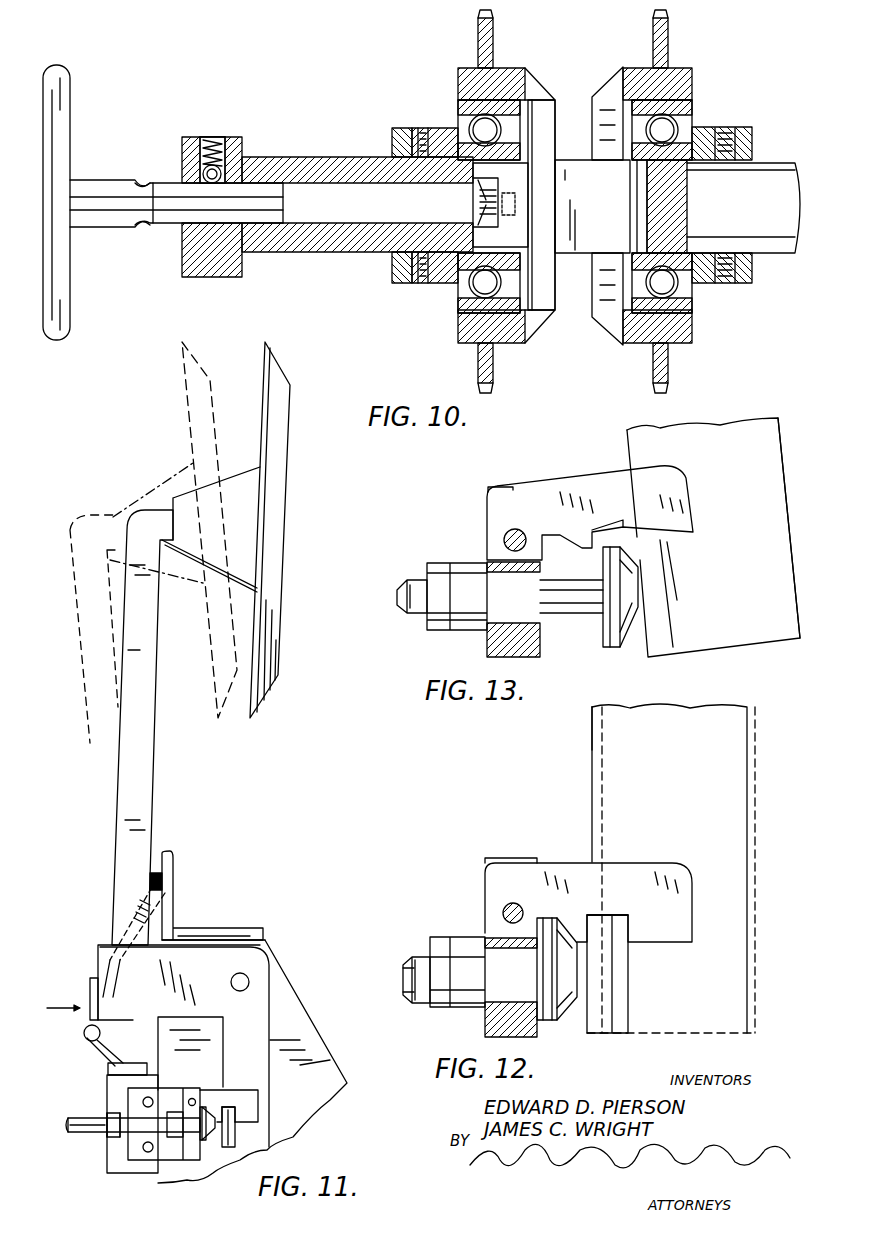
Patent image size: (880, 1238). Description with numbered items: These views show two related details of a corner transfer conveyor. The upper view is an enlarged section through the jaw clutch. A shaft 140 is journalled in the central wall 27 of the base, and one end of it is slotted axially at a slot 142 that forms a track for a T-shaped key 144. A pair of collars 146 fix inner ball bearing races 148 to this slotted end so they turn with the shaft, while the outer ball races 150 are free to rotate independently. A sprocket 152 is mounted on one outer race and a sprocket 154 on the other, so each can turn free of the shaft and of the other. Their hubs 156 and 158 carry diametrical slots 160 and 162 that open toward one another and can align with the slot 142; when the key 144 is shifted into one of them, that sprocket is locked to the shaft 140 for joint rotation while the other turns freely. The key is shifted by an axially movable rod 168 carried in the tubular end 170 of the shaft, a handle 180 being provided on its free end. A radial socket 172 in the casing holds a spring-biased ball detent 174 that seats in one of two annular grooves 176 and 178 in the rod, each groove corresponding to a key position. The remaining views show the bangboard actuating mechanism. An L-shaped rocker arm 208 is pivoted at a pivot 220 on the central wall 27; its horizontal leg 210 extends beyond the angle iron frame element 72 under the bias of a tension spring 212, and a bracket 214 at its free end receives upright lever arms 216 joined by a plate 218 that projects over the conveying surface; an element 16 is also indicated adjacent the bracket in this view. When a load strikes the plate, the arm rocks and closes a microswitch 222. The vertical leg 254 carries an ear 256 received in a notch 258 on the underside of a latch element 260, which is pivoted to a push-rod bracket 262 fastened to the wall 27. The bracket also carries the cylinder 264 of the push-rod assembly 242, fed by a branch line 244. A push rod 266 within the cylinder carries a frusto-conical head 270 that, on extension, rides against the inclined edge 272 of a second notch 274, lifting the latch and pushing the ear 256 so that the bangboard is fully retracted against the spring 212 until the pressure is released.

In FIG. 11, the mounting tab 16 is at (52, 1009).
In FIG. 11, the central wall 27 is at (330, 1060).
In FIG. 11, the angle iron frame element 72 is at (180, 893).
In FIG. 10, the shaft 140 is at (770, 170).
In FIG. 10, the slot 142 is at (587, 240).
In FIG. 10, the T-shaped key 144 is at (545, 118).
In FIG. 10, the collars 146 is at (398, 280).
In FIG. 10, the inner ball bearing races 148 is at (440, 278).
In FIG. 10, the outer ball races 150 is at (460, 106).
In FIG. 10, the sprocket 152 is at (495, 35).
In FIG. 10, the sprocket 154 is at (668, 38).
In FIG. 10, the hub 156 is at (460, 72).
In FIG. 10, the hub 158 is at (692, 84).
In FIG. 10, the diametrical slot 160 is at (543, 76).
In FIG. 10, the diametrical slot 162 is at (605, 95).
In FIG. 10, the axially-moveable rod 168 is at (104, 192).
In FIG. 10, the tubular end 170 is at (322, 165).
In FIG. 10, the radial socket 172 is at (200, 144).
In FIG. 10, the spring-biased ball detent 174 is at (202, 172).
In FIG. 10, the annular groove 176 is at (192, 205).
In FIG. 10, the annular groove 178 is at (140, 228).
In FIG. 10, the handle 180 is at (70, 318).
In FIG. 13, the L-shaped rocker arm 208 is at (713, 537).
In FIG. 12, the L-shaped rocker arm 208 is at (671, 868).
In FIG. 11, the L-shaped rocker arm 208 is at (265, 1002).
In FIG. 11, the horizontal leg 210 is at (100, 952).
In FIG. 11, the tension spring 212 is at (135, 902).
In FIG. 11, the bracket 214 is at (92, 985).
In FIG. 11, the lever arms 216 is at (150, 777).
In FIG. 11, the plate 218 is at (270, 603).
In FIG. 11, the pivot 220 is at (248, 980).
In FIG. 11, the microswitch 222 is at (110, 1065).
In FIG. 13, the push-rod assembly 242 is at (445, 562).
In FIG. 12, the push-rod assembly 242 is at (438, 938).
In FIG. 11, the push-rod assembly 242 is at (100, 1118).
In FIG. 11, the branch line 244 is at (85, 1125).
In FIG. 13, the vertical leg 254 is at (745, 428).
In FIG. 12, the vertical leg 254 is at (610, 755).
In FIG. 11, the vertical leg 254 is at (253, 1038).
In FIG. 13, the ear 256 is at (665, 630).
In FIG. 12, the ear 256 is at (612, 1010).
In FIG. 11, the ear 256 is at (240, 1135).
In FIG. 13, the notch 258 is at (622, 522).
In FIG. 12, the notch 258 is at (625, 930).
In FIG. 11, the notch 258 is at (238, 1112).
In FIG. 13, the latch element 260 is at (590, 475).
In FIG. 12, the latch element 260 is at (640, 868).
In FIG. 11, the latch element 260 is at (250, 1093).
In FIG. 13, the push-rod bracket 262 is at (493, 490).
In FIG. 12, the push-rod bracket 262 is at (503, 860).
In FIG. 11, the push-rod bracket 262 is at (173, 1092).
In FIG. 13, the cylinder 264 is at (425, 580).
In FIG. 12, the cylinder 264 is at (422, 1003).
In FIG. 11, the cylinder 264 is at (118, 1133).
In FIG. 13, the push rod 266 is at (558, 600).
In FIG. 12, the push rod 266 is at (413, 962).
In FIG. 13, the frusto-conical head 270 is at (615, 652).
In FIG. 12, the frusto-conical head 270 is at (560, 1022).
In FIG. 11, the frusto-conical head 270 is at (208, 1140).
In FIG. 13, the inclined edge 272 is at (572, 552).
In FIG. 12, the inclined edge 272 is at (570, 935).
In FIG. 11, the inclined edge 272 is at (205, 1115).
In FIG. 13, the second notch 274 is at (550, 530).
In FIG. 12, the second notch 274 is at (548, 915).